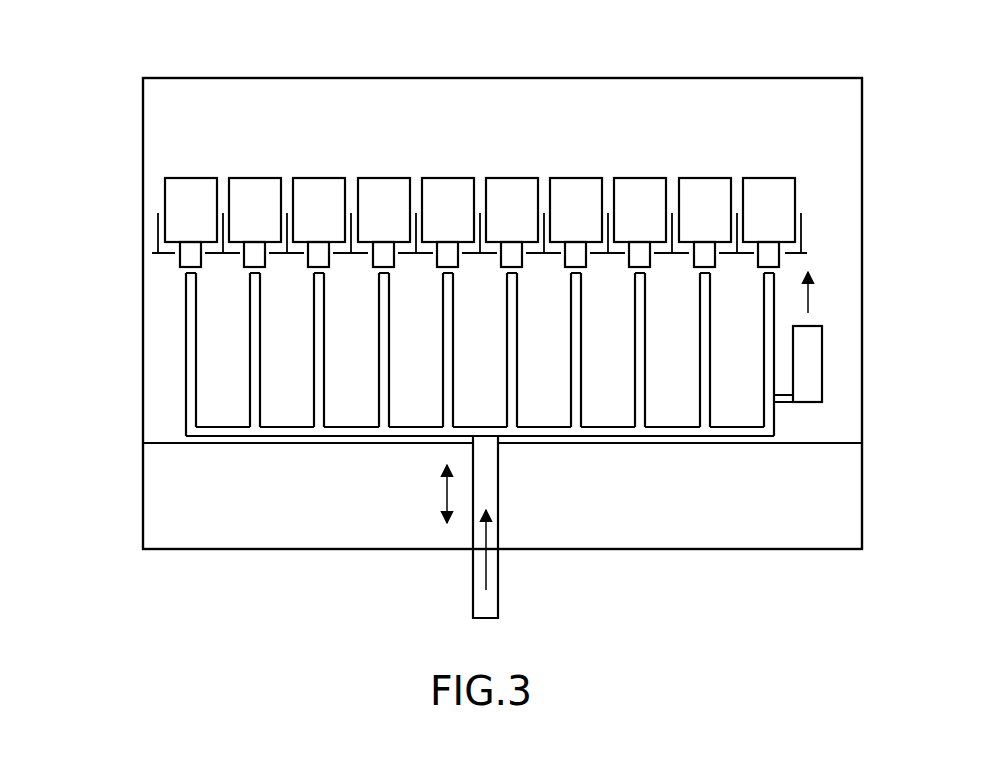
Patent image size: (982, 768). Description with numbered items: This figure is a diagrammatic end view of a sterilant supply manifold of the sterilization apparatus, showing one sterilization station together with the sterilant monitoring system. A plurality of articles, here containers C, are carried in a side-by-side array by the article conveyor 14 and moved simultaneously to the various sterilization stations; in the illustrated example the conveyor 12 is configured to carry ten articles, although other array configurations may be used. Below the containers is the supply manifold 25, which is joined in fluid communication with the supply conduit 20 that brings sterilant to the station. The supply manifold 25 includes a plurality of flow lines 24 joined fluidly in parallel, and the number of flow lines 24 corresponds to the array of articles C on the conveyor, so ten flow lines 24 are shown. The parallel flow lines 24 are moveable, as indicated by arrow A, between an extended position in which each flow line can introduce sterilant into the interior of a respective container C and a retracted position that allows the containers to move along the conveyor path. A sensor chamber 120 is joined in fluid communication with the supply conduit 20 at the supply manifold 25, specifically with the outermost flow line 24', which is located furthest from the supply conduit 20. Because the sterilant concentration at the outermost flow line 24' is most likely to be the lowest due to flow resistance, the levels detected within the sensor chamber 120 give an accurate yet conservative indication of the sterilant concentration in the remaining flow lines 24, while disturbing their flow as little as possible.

The conveyor 12 is at (742, 78).
The article conveyor 14 is at (428, 187).
The containers C is at (772, 178).
The flow lines 24 is at (430, 354).
The outermost flow line 24' is at (502, 455).
The supply conduit 20 is at (487, 605).
The supply manifold 25 is at (686, 518).
The sensor chamber 120 is at (815, 360).
The arrow A is at (425, 494).